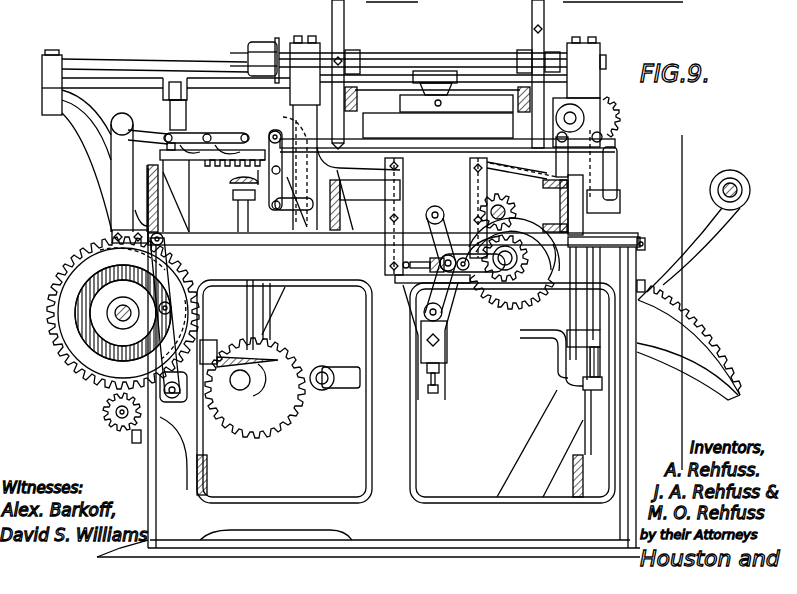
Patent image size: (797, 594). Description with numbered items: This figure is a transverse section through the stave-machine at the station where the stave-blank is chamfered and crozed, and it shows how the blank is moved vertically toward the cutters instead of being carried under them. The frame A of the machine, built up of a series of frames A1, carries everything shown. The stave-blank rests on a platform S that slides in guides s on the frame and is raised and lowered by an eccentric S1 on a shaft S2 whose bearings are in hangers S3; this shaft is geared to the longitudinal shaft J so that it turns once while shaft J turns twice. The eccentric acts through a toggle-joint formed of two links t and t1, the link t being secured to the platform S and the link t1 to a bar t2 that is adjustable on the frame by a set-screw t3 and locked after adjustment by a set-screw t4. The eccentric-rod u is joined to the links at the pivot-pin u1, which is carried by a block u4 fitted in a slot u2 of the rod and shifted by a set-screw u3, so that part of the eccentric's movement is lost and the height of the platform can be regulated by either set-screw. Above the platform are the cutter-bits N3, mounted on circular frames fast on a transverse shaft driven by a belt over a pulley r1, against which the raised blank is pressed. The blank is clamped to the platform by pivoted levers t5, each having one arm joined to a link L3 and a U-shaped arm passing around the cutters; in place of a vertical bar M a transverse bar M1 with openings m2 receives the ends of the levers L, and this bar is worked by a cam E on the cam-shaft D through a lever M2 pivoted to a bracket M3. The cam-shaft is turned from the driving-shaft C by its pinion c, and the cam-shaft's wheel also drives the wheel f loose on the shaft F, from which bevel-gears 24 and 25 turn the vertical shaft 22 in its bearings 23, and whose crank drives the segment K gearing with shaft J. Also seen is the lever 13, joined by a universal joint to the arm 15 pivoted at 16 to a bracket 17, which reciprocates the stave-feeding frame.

The pivot 16 is at (52, 76).
The arm 15 is at (176, 88).
The bracket 17 is at (97, 161).
The lever 13 is at (166, 196).
The pulley r1 is at (254, 55).
The cutter-bits N3 is at (449, 115).
The pivoted lever t5 is at (283, 132).
The levers L is at (612, 232).
The link L3 is at (212, 156).
The vertical bar M is at (120, 211).
The transverse bar M1 is at (213, 244).
The lever M2 is at (165, 273).
The bracket M3 is at (173, 395).
The openings m2 is at (600, 250).
The cam-shaft D is at (123, 306).
The cams E is at (62, 323).
The shaft F is at (238, 380).
The driving-shaft C is at (104, 410).
The pinion c is at (120, 420).
The vertical shaft 22 is at (240, 315).
The bearings 23 is at (273, 311).
The bevel-gear 24 is at (242, 353).
The bevel-gear 25 is at (306, 382).
The wheel f is at (255, 380).
The frames A1 is at (368, 362).
The frame A is at (690, 402).
The segment K is at (619, 391).
The platform S is at (447, 207).
The guides s is at (390, 198).
The longitudinal shaft J is at (488, 213).
The link t is at (432, 237).
The eccentric-rod u is at (499, 245).
The pivot-pin u1 is at (450, 255).
The slot u2 is at (464, 272).
The set-screw u3 is at (432, 279).
The block u4 is at (428, 260).
The link t1 is at (430, 302).
The bar t2 is at (448, 335).
The set-screw t3 is at (441, 388).
The set-screw t4 is at (425, 345).
The eccentric S1 is at (512, 306).
The shaft S2 is at (505, 258).
The hangers S3 is at (545, 263).